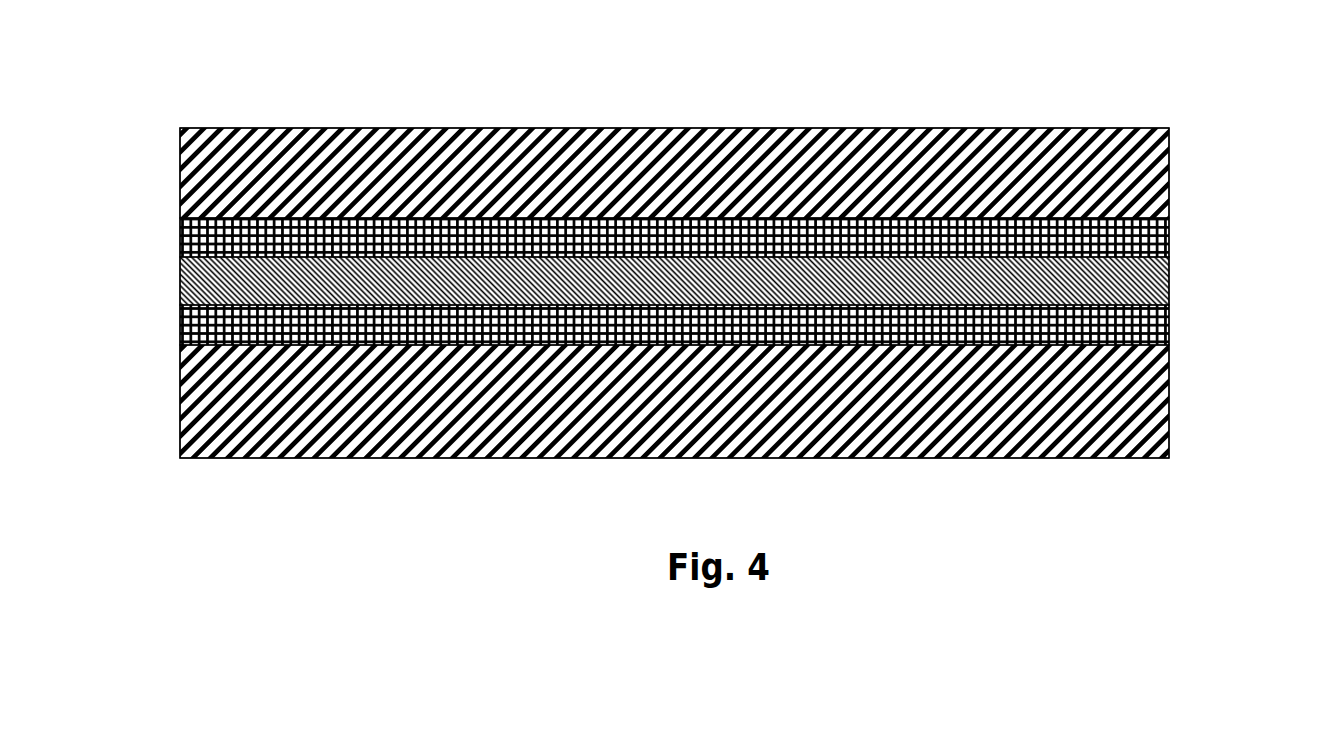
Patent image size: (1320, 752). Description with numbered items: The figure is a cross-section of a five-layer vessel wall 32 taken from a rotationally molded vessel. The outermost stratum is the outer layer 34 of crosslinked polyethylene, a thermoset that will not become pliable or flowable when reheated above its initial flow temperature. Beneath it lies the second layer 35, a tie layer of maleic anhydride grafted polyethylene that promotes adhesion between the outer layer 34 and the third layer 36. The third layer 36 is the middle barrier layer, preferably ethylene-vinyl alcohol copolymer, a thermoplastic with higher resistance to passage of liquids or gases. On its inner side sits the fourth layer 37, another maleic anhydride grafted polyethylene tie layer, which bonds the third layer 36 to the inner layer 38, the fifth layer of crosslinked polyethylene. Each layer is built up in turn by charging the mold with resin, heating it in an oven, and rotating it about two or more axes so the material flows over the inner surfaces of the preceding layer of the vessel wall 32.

The vessel wall 32 is at (736, 236).
The outer layer 34 is at (1143, 165).
The second layer 35 is at (1172, 222).
The third layer 36 is at (1145, 282).
The fourth layer 37 is at (1150, 330).
The inner layer 38 is at (1137, 422).